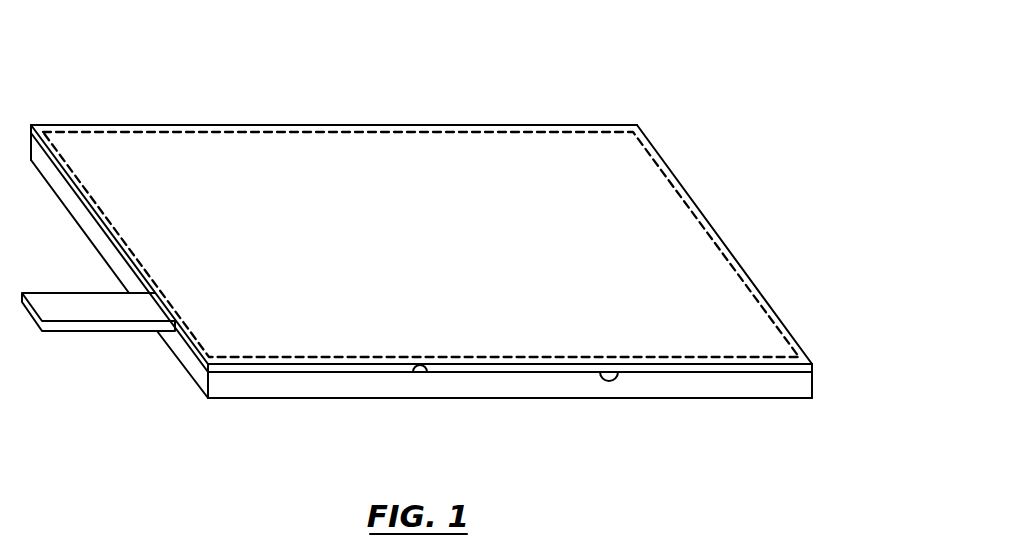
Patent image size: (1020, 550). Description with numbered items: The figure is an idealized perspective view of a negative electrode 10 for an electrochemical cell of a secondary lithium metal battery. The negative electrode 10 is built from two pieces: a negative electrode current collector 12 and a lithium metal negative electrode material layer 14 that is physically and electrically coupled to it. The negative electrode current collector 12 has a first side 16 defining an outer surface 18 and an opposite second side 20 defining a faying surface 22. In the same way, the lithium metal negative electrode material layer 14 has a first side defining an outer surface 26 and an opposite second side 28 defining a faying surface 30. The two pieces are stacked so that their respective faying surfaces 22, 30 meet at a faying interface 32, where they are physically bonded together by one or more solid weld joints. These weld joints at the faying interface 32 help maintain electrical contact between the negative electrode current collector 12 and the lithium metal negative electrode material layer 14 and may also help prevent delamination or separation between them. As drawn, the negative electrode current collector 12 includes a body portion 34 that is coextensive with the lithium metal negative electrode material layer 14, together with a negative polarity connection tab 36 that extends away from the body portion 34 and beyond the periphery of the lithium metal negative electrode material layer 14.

The negative electrode 10 is at (673, 75).
The negative electrode current collector 12 is at (173, 125).
The lithium metal negative electrode material layer 14 is at (262, 400).
The first side 16 is at (507, 125).
The outer surface 18 is at (687, 230).
The second side 20 is at (520, 376).
The faying surface 22 is at (620, 370).
The outer surface 26 is at (745, 399).
The second side 28 is at (360, 372).
The faying surface 30 is at (432, 372).
The faying interface 32 is at (813, 371).
The body portion 34 is at (327, 125).
The negative polarity connection tab 36 is at (72, 333).